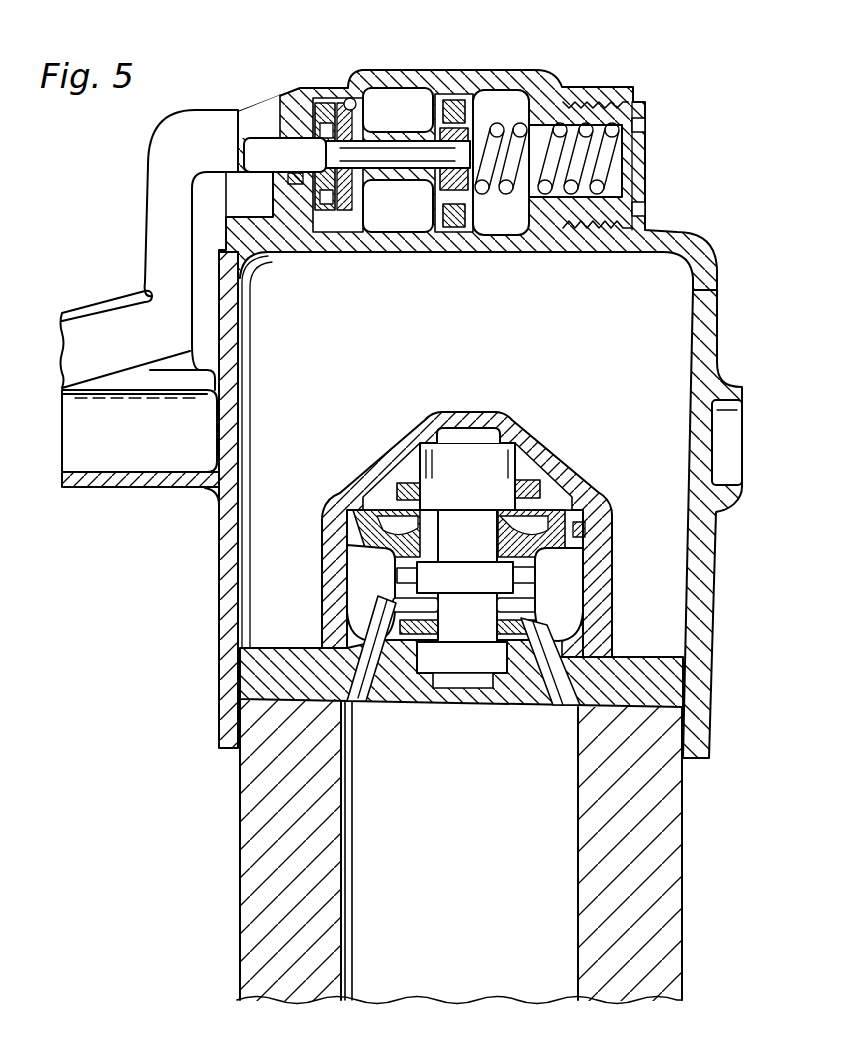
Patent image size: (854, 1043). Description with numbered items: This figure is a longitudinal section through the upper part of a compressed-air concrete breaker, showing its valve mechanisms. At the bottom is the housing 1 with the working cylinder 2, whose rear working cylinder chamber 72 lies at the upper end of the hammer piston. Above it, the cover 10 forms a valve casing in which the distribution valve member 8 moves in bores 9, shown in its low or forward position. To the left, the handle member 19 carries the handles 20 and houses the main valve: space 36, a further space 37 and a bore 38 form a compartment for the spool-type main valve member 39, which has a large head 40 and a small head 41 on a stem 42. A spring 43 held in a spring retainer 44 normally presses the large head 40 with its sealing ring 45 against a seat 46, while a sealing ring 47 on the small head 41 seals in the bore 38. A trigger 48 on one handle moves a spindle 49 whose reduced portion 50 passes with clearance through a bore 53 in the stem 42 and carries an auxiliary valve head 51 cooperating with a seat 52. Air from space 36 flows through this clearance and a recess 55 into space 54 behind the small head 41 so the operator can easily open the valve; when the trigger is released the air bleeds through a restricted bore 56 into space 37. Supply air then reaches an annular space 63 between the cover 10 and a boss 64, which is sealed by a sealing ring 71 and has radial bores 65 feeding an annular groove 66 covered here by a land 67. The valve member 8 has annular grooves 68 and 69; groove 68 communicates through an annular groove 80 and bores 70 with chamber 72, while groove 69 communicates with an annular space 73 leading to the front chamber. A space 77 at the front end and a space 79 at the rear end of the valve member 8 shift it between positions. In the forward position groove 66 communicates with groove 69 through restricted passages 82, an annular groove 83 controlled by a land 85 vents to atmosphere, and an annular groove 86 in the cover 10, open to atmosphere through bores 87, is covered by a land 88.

The housing 1 is at (680, 862).
The working cylinder 2 is at (343, 858).
The distribution valve member 8 is at (440, 675).
The bores 9 is at (427, 540).
The cover 10 is at (500, 425).
The handle member 19 is at (710, 300).
The handles 20 is at (153, 486).
The space 36 is at (495, 234).
The space 37 is at (405, 236).
The bore 38 is at (373, 108).
The main valve member 39 is at (476, 110).
The large head 40 is at (453, 205).
The small head 41 is at (337, 215).
The stem 42 is at (407, 178).
The spring 43 is at (604, 166).
The spring retainer 44 is at (628, 192).
The sealing ring 45 is at (450, 218).
The seat 46 is at (450, 106).
The sealing ring 47 is at (322, 104).
The trigger 48 is at (97, 307).
The spindle 49 is at (259, 150).
The reduced portion 50 is at (390, 157).
The auxiliary valve head 51 is at (466, 170).
The seat 52 is at (463, 157).
The bore 53 is at (357, 153).
The space 54 is at (318, 128).
The recess 55 is at (328, 148).
The restricted bore 56 is at (342, 197).
The annular space 63 is at (573, 598).
The boss 64 is at (600, 633).
The radial bores 65 is at (545, 583).
The annular groove 66 is at (533, 573).
The land 67 is at (464, 594).
The annular groove 68 is at (522, 665).
The annular groove 69 is at (495, 545).
The bores 70 is at (363, 692).
The sealing ring 71 is at (586, 530).
The rear working cylinder chamber 72 is at (374, 817).
The annular space 73 is at (377, 523).
The space 77 is at (463, 688).
The space 79 is at (468, 438).
The annular groove 80 is at (393, 602).
The restricted passages 82 is at (375, 560).
The annular groove 83 is at (400, 630).
The land 85 is at (439, 674).
The annular groove 86 is at (550, 490).
The bores 87 is at (545, 495).
The land 88 is at (452, 511).